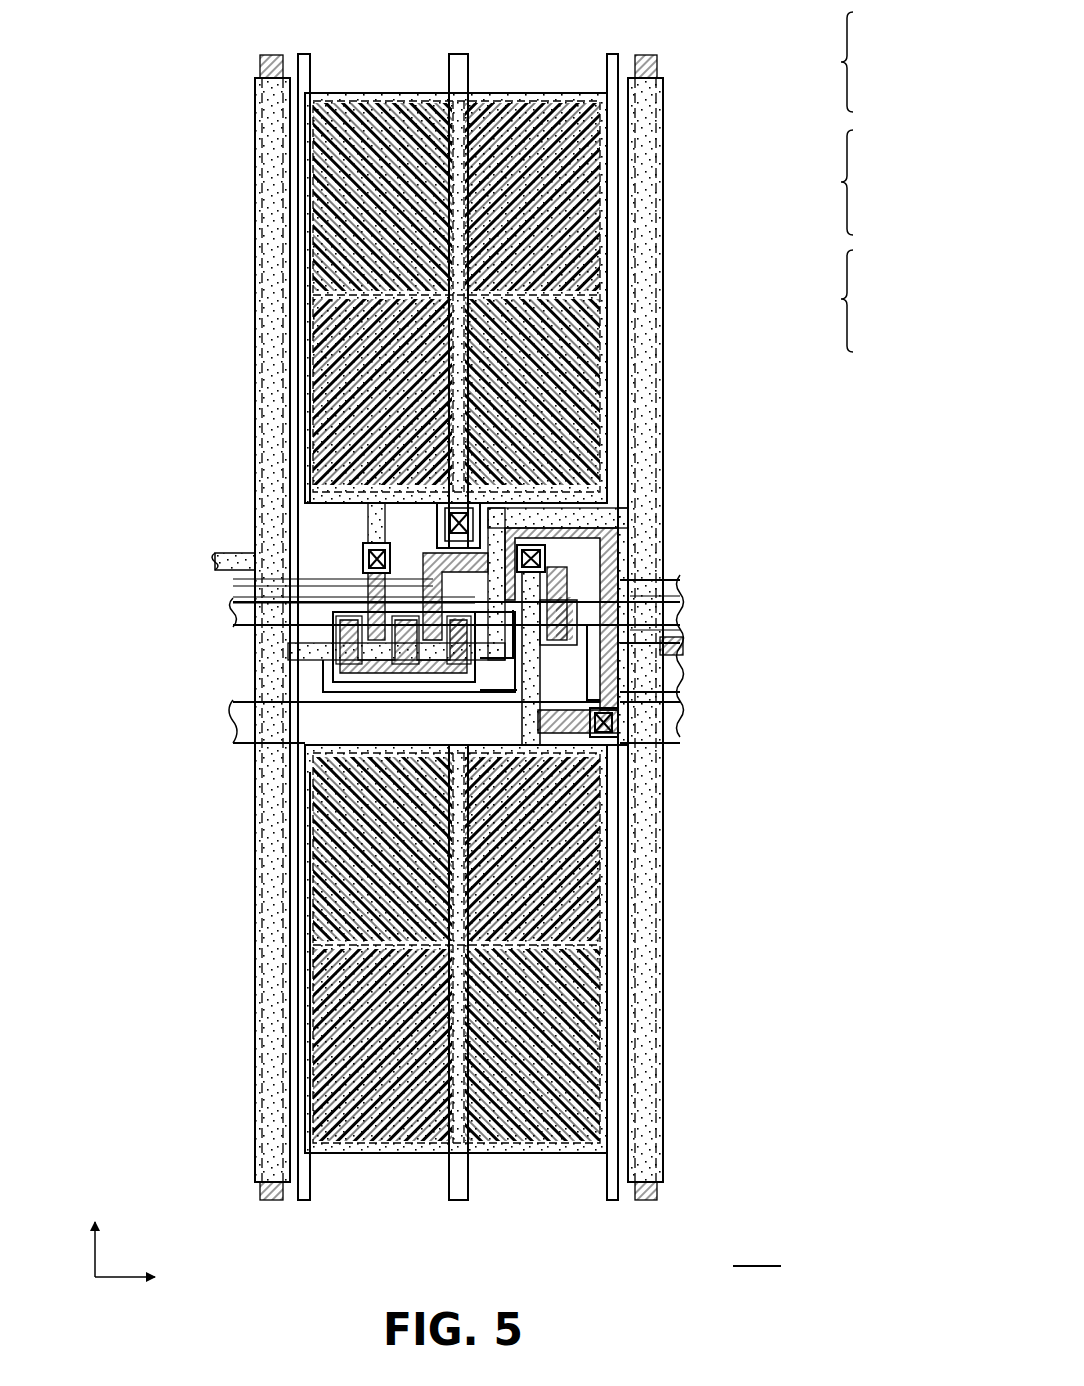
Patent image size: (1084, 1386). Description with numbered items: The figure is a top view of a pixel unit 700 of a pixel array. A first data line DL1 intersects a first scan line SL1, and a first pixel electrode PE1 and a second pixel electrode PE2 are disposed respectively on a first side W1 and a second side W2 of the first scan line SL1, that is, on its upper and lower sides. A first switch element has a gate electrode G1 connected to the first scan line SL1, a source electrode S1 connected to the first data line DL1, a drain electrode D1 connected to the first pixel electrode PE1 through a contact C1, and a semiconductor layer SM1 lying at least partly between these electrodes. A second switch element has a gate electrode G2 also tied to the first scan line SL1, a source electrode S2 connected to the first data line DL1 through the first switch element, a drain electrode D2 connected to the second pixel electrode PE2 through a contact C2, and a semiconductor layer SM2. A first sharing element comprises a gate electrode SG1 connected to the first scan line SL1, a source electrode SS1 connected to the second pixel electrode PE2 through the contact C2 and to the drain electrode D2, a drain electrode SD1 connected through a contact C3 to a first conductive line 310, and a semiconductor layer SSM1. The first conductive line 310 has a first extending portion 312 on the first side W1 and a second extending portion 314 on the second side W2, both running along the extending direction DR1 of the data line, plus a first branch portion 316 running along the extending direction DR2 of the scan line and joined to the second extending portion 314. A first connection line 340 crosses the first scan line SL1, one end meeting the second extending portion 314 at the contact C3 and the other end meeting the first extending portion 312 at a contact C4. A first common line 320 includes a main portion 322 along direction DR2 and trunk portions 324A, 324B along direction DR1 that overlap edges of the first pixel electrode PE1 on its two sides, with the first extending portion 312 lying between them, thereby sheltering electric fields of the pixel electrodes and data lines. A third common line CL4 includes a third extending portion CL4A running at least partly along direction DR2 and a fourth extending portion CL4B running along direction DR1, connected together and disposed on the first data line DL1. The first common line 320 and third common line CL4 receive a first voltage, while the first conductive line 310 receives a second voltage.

The first conductive line 310 is at (848, 62).
The first extending portion 312 is at (462, 78).
The second extending portion 314 is at (462, 1180).
The first branch portion 316 is at (250, 735).
The first common line 320 is at (856, 181).
The main portion 322 is at (262, 560).
The trunk portion 324A is at (292, 247).
The trunk portion 324B is at (625, 332).
The third common line CL4 is at (857, 301).
The third extending portion CL4A is at (555, 508).
The fourth extending portion CL4B is at (297, 955).
The first data line DL1 is at (271, 57).
The first pixel electrode PE1 is at (325, 190).
The second pixel electrode PE2 is at (330, 890).
The contact C1 is at (365, 557).
The contact C2 is at (545, 557).
The contact C3 is at (618, 722).
The contact C4 is at (437, 520).
The drain electrode D1 is at (425, 583).
The drain electrode D2 is at (455, 600).
The source electrode S1 is at (365, 620).
The source electrode S2 is at (432, 630).
The gate electrode G1 is at (340, 690).
The gate electrode G2 is at (440, 660).
The semiconductor layer SM1 is at (350, 640).
The semiconductor layer SM2 is at (457, 607).
The first scan line SL1 is at (233, 613).
The source electrode SS1 is at (560, 620).
The semiconductor layer SSM1 is at (570, 650).
The gate electrode SG1 is at (575, 655).
The drain electrode SD1 is at (568, 728).
The first connection line 340 is at (612, 600).
The first side W1 is at (673, 597).
The second side W2 is at (673, 631).
The pixel unit 700 is at (757, 1250).
The extending direction DR1 is at (100, 1224).
The extending direction DR2 is at (157, 1278).